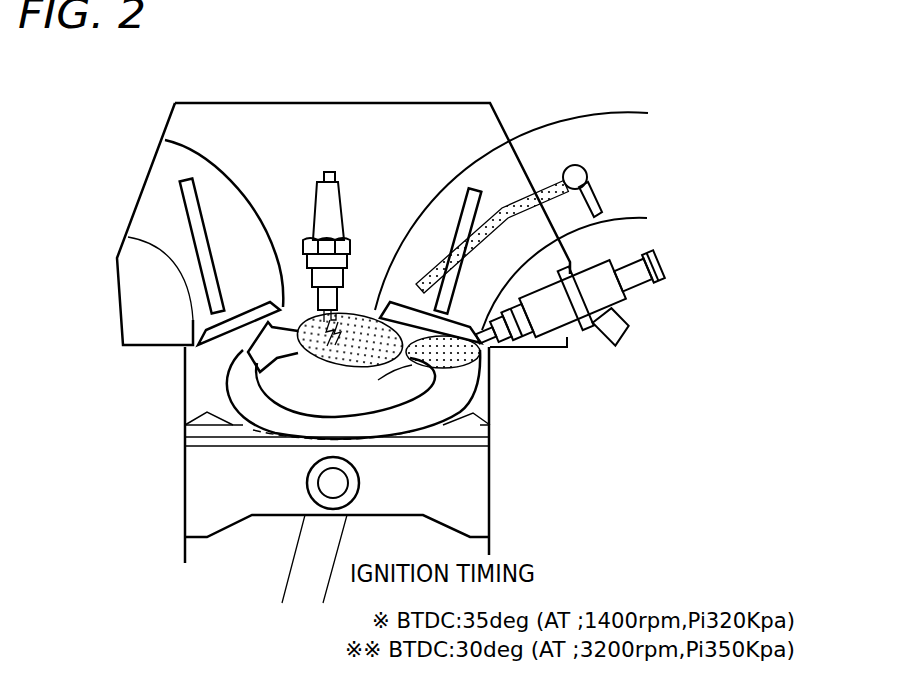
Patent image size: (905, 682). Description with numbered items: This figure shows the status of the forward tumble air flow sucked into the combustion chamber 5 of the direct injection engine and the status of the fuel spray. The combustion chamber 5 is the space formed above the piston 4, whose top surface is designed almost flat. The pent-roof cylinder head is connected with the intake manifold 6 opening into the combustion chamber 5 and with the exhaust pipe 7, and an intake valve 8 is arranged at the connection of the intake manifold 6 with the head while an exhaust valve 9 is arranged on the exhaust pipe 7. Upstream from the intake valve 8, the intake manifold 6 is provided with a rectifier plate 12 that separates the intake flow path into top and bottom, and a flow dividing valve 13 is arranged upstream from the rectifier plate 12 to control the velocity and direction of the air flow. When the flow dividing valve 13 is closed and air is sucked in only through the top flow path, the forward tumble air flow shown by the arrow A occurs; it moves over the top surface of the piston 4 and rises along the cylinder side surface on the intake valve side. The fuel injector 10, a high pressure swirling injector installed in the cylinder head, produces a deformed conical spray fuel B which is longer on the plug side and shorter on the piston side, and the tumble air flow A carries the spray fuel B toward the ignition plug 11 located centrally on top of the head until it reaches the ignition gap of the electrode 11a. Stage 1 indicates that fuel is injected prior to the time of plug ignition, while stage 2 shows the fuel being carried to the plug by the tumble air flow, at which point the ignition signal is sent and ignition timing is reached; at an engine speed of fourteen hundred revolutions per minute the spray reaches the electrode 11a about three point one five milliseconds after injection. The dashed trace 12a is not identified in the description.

The piston 4 is at (472, 500).
The combustion chamber 5 is at (203, 373).
The intake manifold 6 is at (636, 112).
The exhaust pipe 7 is at (155, 207).
The intake valve 8 is at (462, 215).
The exhaust valve 9 is at (193, 197).
The fuel injector 10 is at (553, 325).
The ignition plug 11 is at (325, 205).
The electrode 11a is at (310, 313).
The rectifier plate 12 is at (517, 200).
The fuel spray on piston 12a is at (395, 425).
The flow dividing valve 13 is at (600, 208).
The fuel injection prior to plug ignition 1 is at (400, 367).
The fuel carried to plug by tumble air flow 2 is at (356, 308).
The tumble air flow A is at (467, 408).
The spray fuel B is at (345, 387).